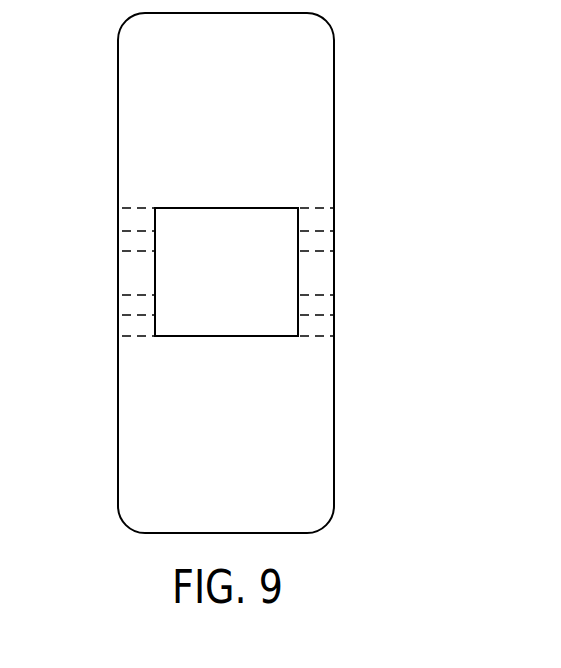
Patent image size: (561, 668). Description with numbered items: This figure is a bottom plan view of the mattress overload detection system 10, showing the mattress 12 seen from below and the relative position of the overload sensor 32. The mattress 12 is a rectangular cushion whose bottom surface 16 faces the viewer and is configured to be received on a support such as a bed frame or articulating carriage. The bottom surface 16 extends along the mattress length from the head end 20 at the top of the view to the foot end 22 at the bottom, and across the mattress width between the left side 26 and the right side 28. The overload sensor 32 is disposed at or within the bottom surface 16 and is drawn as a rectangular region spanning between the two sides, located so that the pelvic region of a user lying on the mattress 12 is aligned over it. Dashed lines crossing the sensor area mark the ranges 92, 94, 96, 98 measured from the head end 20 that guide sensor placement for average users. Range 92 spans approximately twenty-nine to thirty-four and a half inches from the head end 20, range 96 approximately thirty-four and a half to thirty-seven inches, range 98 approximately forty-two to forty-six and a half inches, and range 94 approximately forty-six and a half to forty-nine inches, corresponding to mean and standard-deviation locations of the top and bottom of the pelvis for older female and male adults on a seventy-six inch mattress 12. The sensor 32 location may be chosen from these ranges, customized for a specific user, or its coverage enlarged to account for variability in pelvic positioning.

The mattress overload detection system 10 is at (350, 47).
The mattress 12 is at (317, 82).
The bottom surface 16 is at (244, 428).
The head end 20 is at (182, 13).
The foot end 22 is at (215, 532).
The left side 26 is at (334, 138).
The right side 28 is at (118, 113).
The overload sensor 32 is at (220, 224).
The range 92 is at (338, 208).
The range 94 is at (338, 315).
The range 96 is at (116, 231).
The range 98 is at (116, 295).